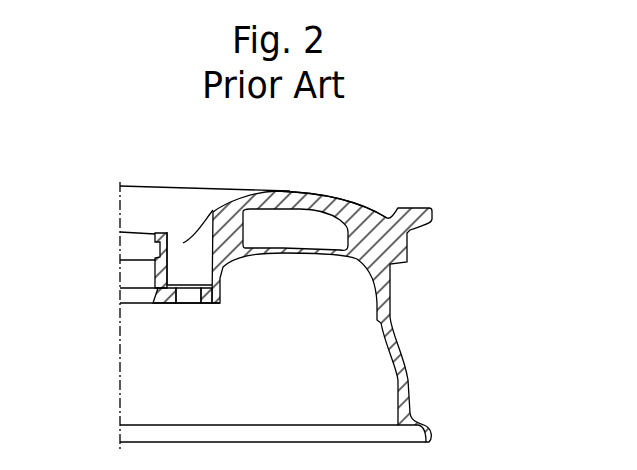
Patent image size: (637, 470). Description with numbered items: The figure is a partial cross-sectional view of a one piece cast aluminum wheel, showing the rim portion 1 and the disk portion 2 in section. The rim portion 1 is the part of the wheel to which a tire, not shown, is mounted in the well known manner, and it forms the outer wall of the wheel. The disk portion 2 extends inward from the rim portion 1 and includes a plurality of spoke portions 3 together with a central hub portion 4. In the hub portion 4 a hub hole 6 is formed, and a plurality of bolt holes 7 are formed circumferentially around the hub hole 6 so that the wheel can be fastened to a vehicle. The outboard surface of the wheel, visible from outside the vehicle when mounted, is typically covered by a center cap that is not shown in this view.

The rim portion 1 is at (388, 299).
The disk portion 2 is at (305, 190).
The spoke portions 3 is at (276, 190).
The central hub portion 4 is at (183, 255).
The hub hole 6 is at (157, 278).
The bolt holes 7 is at (188, 302).